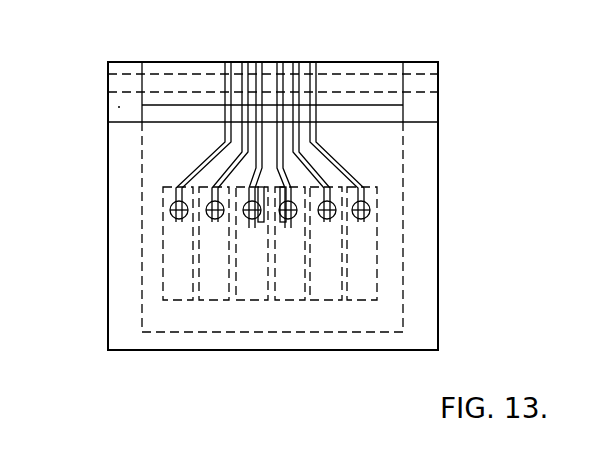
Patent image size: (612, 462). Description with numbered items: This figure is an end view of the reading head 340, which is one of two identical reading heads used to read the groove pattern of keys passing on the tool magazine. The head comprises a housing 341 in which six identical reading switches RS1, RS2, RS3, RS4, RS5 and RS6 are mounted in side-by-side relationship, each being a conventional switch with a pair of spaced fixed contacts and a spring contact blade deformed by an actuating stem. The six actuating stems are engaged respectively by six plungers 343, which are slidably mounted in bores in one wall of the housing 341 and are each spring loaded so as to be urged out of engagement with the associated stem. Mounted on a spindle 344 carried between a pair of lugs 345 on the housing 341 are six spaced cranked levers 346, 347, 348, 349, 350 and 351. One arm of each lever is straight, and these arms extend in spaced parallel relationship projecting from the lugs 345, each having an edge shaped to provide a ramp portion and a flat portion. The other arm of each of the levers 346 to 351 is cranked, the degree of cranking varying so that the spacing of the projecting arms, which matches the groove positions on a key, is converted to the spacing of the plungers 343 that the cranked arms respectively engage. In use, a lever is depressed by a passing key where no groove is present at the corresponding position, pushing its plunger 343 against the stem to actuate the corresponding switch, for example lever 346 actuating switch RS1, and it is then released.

The reading head 340 is at (440, 277).
The housing 341 is at (423, 182).
The plungers 343 is at (169, 210).
The spindle 344 is at (390, 83).
The lugs 345 is at (118, 107).
The cranked lever 346 is at (227, 138).
The cranked lever 347 is at (247, 130).
The cranked lever 348 is at (263, 105).
The cranked lever 349 is at (282, 108).
The cranked lever 350 is at (297, 130).
The cranked lever 351 is at (318, 137).
The reading switch RS1 is at (176, 285).
The reading switch RS2 is at (213, 285).
The reading switch RS3 is at (251, 285).
The reading switch RS4 is at (289, 285).
The reading switch RS5 is at (329, 285).
The reading switch RS6 is at (370, 285).